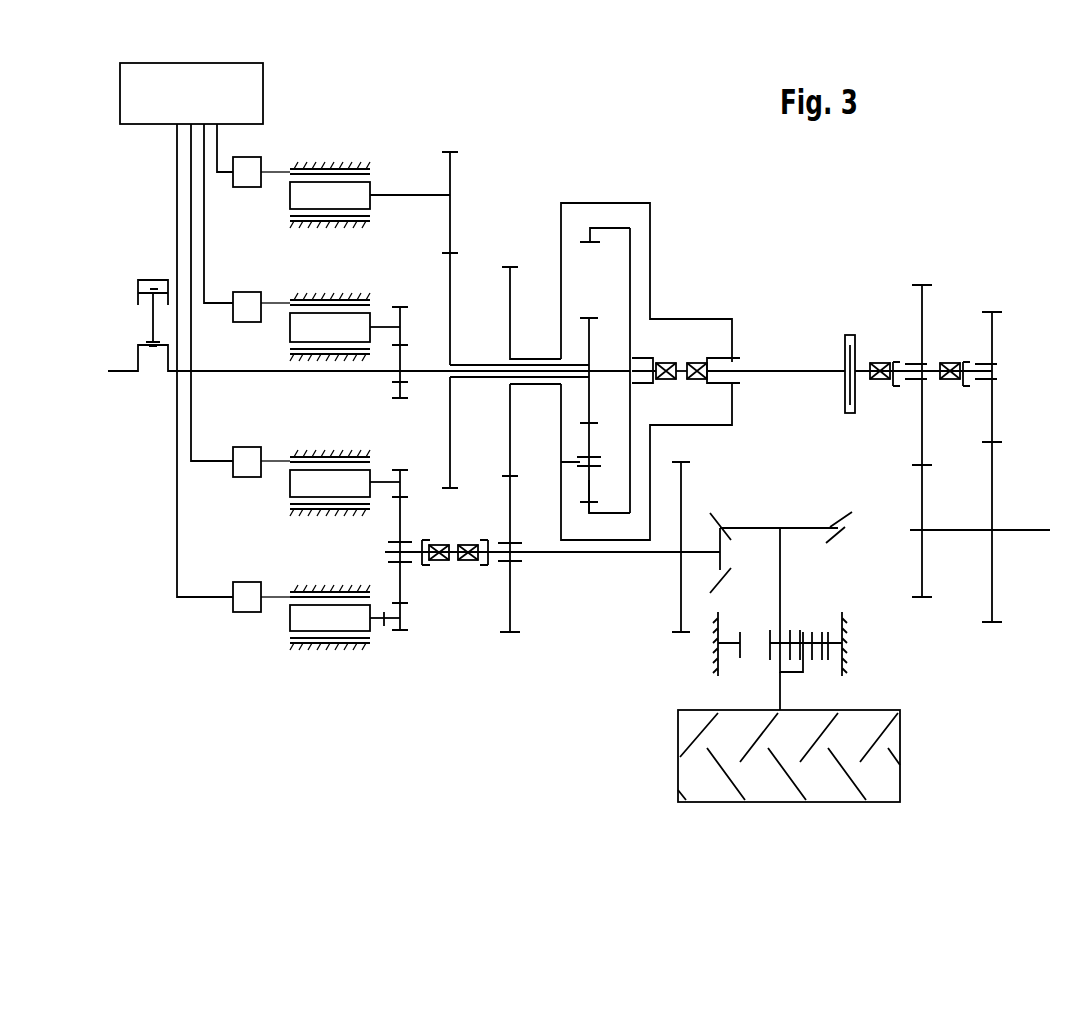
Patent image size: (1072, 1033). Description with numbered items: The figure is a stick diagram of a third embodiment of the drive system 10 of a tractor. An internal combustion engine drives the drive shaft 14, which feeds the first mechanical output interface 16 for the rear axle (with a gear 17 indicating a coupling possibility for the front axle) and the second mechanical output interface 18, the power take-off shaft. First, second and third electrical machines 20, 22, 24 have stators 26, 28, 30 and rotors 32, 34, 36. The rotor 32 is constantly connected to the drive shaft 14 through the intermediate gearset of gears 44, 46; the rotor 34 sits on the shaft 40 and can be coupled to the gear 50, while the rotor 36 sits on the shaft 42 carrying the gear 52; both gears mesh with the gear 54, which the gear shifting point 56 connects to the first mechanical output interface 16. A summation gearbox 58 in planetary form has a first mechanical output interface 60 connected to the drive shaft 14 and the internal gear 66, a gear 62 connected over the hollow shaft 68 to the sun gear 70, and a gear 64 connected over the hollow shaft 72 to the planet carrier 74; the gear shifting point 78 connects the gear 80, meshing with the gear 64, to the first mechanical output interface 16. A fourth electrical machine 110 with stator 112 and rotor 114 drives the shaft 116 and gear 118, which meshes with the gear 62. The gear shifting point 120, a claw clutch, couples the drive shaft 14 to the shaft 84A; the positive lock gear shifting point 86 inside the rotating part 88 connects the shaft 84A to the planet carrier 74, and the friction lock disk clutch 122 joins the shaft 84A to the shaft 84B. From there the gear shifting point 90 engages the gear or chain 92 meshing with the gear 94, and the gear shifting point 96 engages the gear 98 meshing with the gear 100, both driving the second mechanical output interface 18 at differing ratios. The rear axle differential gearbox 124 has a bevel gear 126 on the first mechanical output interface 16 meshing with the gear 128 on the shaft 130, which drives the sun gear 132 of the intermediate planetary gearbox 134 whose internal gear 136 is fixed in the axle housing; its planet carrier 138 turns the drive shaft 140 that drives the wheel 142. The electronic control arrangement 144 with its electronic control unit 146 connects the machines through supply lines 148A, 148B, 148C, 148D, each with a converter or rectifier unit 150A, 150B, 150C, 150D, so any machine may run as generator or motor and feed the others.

The drive system 10 is at (692, 133).
The drive shaft 14 is at (298, 373).
The first mechanical output interface 16 is at (600, 560).
The gear 17 is at (683, 490).
The second mechanical output interface 18 is at (1027, 532).
The first electrical machine 20 is at (318, 299).
The second electrical machine 22 is at (317, 465).
The third electrical machine 24 is at (310, 618).
The stator 26 is at (325, 301).
The stator 28 is at (330, 457).
The stator 30 is at (317, 592).
The rotor 32 is at (362, 327).
The rotor 34 is at (372, 480).
The rotor 36 is at (360, 629).
The shaft 40 is at (384, 494).
The shaft 42 is at (383, 623).
The gear 44 is at (405, 385).
The gear 46 is at (405, 310).
The gear 50 is at (403, 477).
The gear 52 is at (402, 624).
The gear 54 is at (403, 515).
The gear shifting point 56 is at (438, 568).
The summation gearbox 58 is at (598, 190).
The first mechanical output interface 60 is at (628, 365).
The gear 62 is at (452, 270).
The gear 64 is at (512, 405).
The internal gear 66 is at (615, 232).
The hollow shaft 68 is at (482, 364).
The sun gear 70 is at (589, 340).
The hollow shaft 72 is at (540, 358).
The planet carrier 74 is at (557, 493).
The gear shifting point 78 is at (469, 568).
The gear 80 is at (512, 590).
The shaft 84A is at (775, 370).
The shaft 84B is at (866, 365).
The gear shifting point 86 is at (694, 360).
The rotating part 88 is at (687, 427).
The gear shifting point 90 is at (879, 382).
The gear or chain 92 is at (923, 410).
The gear 94 is at (923, 488).
The gear shifting point 96 is at (952, 360).
The gear 98 is at (994, 332).
The gear 100 is at (994, 482).
The fourth electrical machine 110 is at (321, 181).
The stator 112 is at (325, 170).
The rotor 114 is at (372, 190).
The shaft 116 is at (430, 195).
The gear 118 is at (455, 171).
The gear shifting point 120 is at (668, 360).
The friction lock disk clutch 122 is at (853, 335).
The rear axle differential gearbox 124 is at (788, 522).
The bevel gear 126 is at (722, 547).
The gear 128 is at (822, 524).
The shaft 130 is at (782, 583).
The sun gear 132 is at (777, 650).
The intermediate planetary gearbox 134 is at (850, 642).
The internal gear 136 is at (828, 652).
The planet carrier 138 is at (812, 662).
The drive shaft 140 is at (778, 705).
The wheel 142 is at (893, 790).
The electronic control arrangement 144 is at (155, 258).
The electronic control unit 146 is at (204, 102).
The supply line 148A is at (205, 252).
The supply line 148B is at (193, 412).
The supply line 148C is at (178, 546).
The supply line 148D is at (220, 143).
The converter or rectifier unit 150A is at (247, 294).
The converter or rectifier unit 150B is at (245, 450).
The converter or rectifier unit 150C is at (245, 584).
The converter or rectifier unit 150D is at (248, 162).